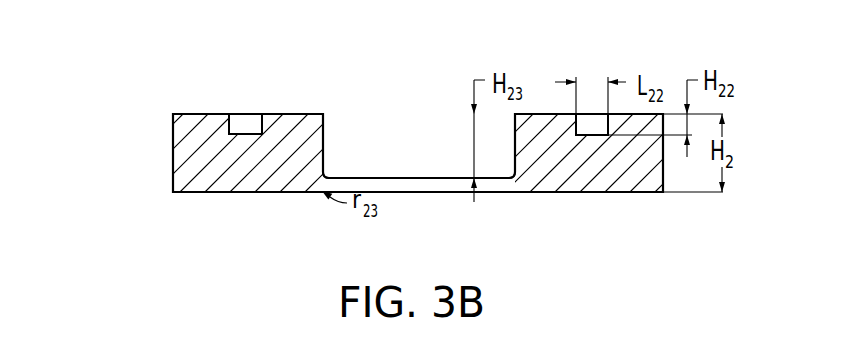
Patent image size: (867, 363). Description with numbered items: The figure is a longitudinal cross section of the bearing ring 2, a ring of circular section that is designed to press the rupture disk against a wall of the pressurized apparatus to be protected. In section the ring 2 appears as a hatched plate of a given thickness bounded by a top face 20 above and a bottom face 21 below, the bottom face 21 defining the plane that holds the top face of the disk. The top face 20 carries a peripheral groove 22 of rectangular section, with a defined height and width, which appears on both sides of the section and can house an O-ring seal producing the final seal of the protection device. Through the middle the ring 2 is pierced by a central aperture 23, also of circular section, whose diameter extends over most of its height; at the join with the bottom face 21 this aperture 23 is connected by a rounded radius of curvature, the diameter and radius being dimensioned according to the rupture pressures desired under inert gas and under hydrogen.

The bearing ring 2 is at (130, 96).
The top face 20 is at (285, 113).
The bottom face 21 is at (227, 193).
The peripheral groove 22 is at (247, 122).
The central aperture 23 is at (393, 142).